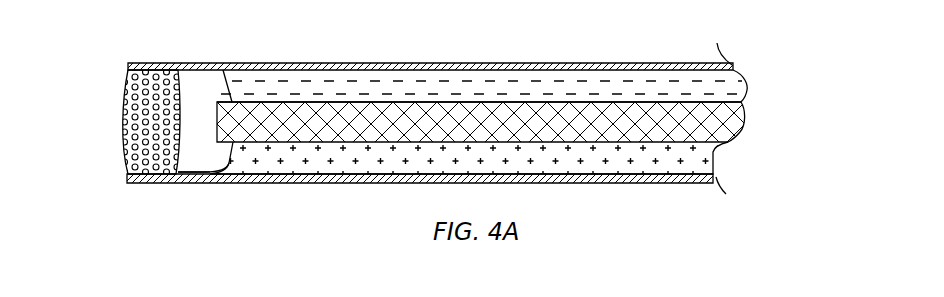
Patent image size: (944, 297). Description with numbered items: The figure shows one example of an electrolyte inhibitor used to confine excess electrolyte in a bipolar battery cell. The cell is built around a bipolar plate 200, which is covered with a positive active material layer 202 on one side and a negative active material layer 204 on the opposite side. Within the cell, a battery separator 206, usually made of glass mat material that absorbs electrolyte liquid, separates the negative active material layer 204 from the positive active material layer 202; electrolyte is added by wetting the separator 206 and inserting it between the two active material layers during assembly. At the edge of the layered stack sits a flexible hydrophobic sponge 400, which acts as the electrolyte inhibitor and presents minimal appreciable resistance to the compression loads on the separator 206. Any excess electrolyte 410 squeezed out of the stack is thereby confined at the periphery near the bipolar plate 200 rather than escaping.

The bipolar plate 200 is at (730, 66).
The positive active material layer 202 is at (705, 163).
The negative active material layer 204 is at (735, 85).
The battery separator 206 is at (732, 127).
The flexible hydrophobic sponge 400 is at (122, 110).
The excess electrolyte 410 is at (190, 174).